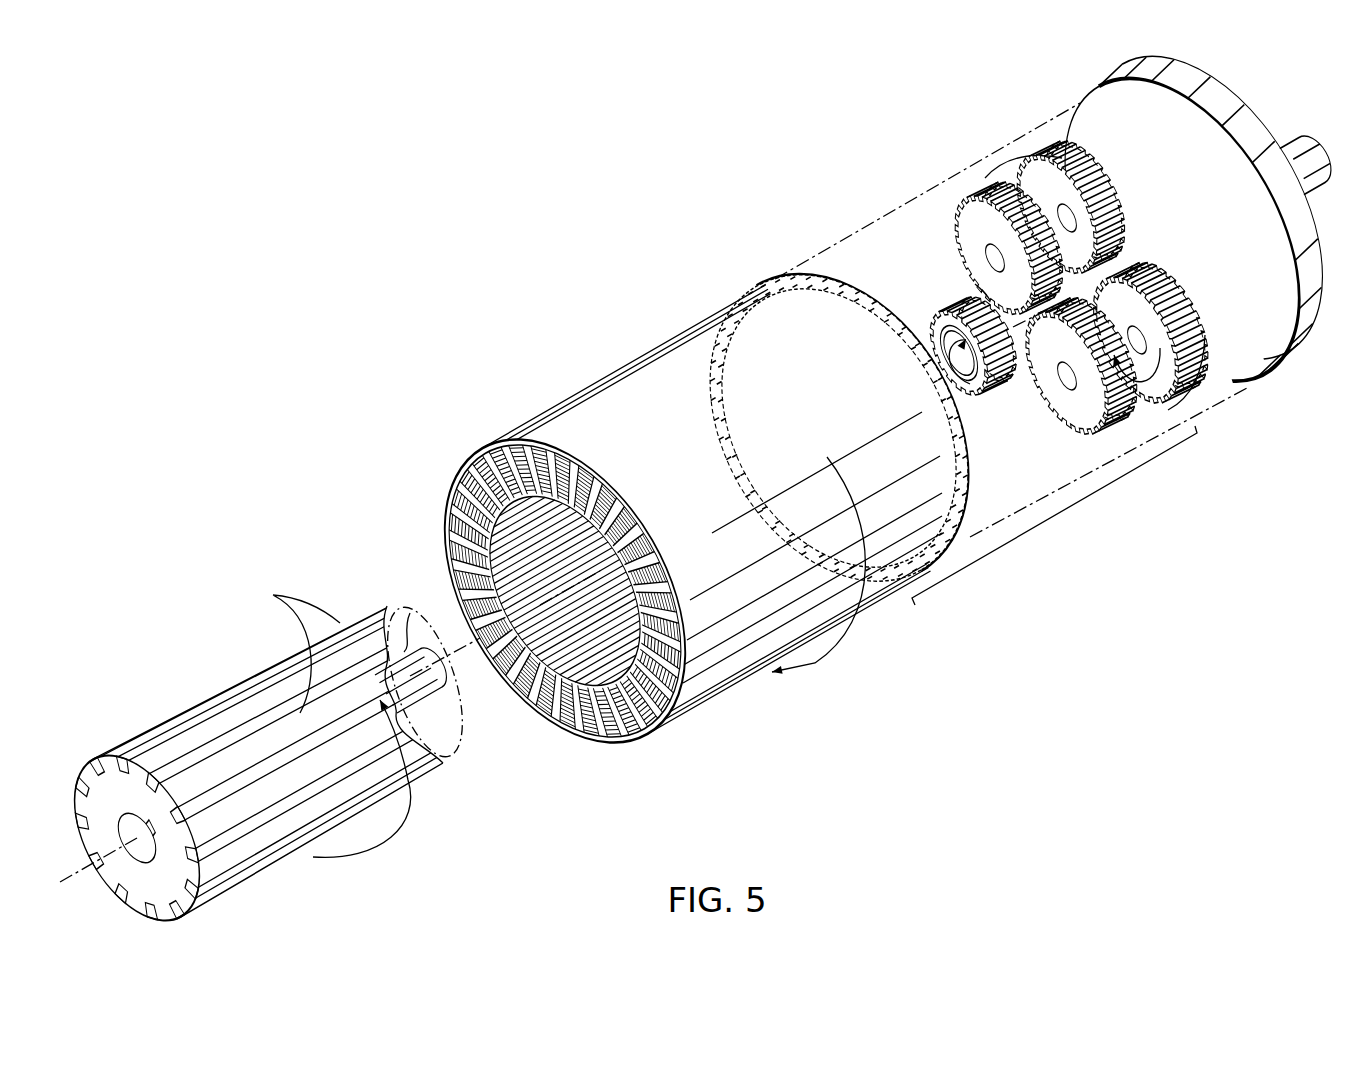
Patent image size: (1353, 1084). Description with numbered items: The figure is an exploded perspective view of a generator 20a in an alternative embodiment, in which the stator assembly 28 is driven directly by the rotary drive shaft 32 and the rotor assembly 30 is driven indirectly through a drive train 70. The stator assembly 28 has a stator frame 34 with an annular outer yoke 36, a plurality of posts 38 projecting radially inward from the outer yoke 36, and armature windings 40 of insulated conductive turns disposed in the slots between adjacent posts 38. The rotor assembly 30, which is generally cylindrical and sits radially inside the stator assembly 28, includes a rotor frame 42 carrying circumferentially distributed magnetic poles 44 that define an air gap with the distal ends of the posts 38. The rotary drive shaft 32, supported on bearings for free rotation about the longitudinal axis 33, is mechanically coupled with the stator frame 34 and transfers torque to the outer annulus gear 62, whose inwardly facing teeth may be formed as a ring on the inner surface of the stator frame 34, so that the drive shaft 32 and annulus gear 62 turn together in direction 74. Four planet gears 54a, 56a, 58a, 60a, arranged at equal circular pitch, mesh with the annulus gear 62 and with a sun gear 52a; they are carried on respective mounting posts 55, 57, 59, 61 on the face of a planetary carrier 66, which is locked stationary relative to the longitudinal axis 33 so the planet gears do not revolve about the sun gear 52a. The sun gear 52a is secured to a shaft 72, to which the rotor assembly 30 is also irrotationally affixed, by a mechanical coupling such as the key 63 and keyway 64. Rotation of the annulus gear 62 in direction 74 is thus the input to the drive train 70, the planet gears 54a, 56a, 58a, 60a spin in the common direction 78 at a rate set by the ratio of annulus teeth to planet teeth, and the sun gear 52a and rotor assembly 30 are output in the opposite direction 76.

The generator 20a is at (326, 323).
The stator assembly 28 is at (568, 358).
The rotor assembly 30 is at (219, 651).
The rotary drive shaft 32 is at (1305, 145).
The longitudinal axis 33 is at (473, 644).
The stator frame 34 is at (537, 414).
The outer yoke 36 is at (460, 507).
The posts 38 is at (488, 486).
The armature windings 40 is at (463, 575).
The rotor frame 42 is at (125, 806).
The magnetic poles 44 is at (292, 647).
The sun gear 52a is at (952, 332).
The planet gear 54a is at (1092, 170).
The mounting post 55 is at (1053, 210).
The planet gear 56a is at (1200, 342).
The mounting post 57 is at (1135, 332).
The planet gear 58a is at (1045, 412).
The mounting post 59 is at (1058, 374).
The planet gear 60a is at (958, 250).
The mounting post 61 is at (992, 250).
The outer annulus gear 62 is at (863, 337).
The key 63 is at (412, 633).
The keyway 64 is at (985, 288).
The planetary carrier 66 is at (1157, 221).
The drive train 70 is at (1058, 514).
The shaft 72 is at (440, 686).
The direction 74 is at (838, 660).
The direction 76 is at (403, 826).
The direction 78 is at (1200, 362).